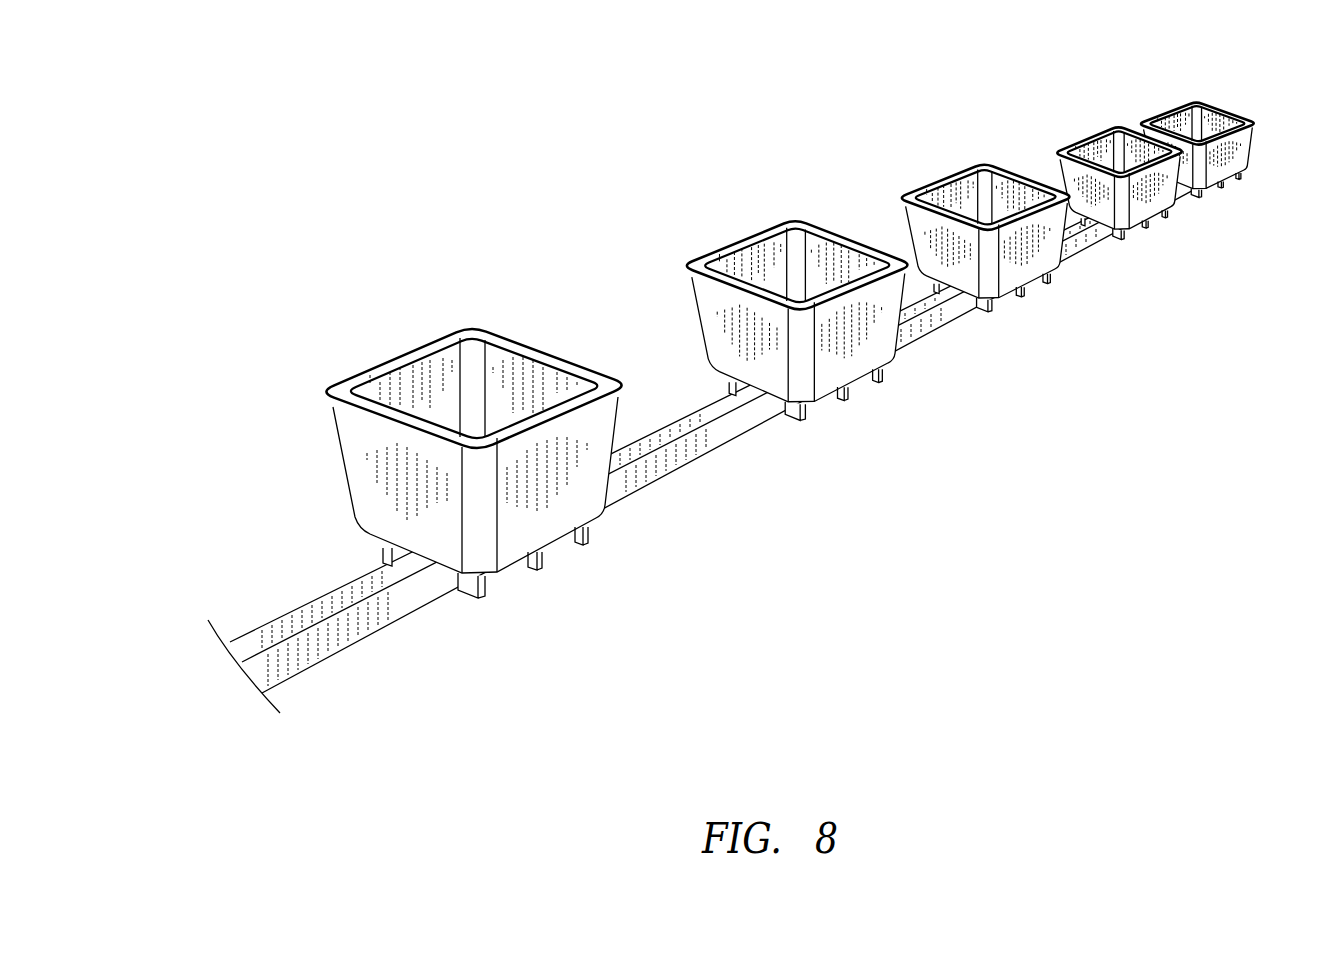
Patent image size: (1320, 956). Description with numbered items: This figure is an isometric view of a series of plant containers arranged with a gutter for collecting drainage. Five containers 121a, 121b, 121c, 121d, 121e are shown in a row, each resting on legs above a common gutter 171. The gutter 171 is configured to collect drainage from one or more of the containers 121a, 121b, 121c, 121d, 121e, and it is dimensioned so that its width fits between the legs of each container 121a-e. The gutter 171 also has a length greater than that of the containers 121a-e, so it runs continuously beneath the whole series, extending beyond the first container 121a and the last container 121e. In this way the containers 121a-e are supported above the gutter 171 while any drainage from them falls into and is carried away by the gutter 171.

The container 121a is at (309, 357).
The container 121b is at (685, 247).
The container 121c is at (894, 176).
The container 121d is at (1046, 127).
The container 121e is at (1149, 96).
The gutter 171 is at (397, 623).